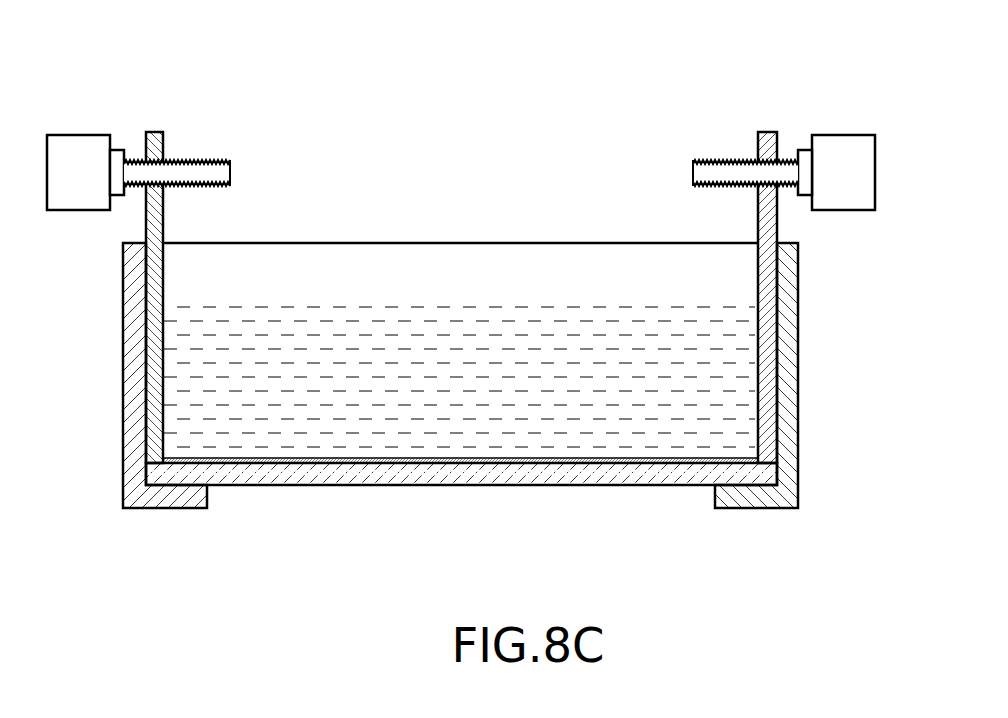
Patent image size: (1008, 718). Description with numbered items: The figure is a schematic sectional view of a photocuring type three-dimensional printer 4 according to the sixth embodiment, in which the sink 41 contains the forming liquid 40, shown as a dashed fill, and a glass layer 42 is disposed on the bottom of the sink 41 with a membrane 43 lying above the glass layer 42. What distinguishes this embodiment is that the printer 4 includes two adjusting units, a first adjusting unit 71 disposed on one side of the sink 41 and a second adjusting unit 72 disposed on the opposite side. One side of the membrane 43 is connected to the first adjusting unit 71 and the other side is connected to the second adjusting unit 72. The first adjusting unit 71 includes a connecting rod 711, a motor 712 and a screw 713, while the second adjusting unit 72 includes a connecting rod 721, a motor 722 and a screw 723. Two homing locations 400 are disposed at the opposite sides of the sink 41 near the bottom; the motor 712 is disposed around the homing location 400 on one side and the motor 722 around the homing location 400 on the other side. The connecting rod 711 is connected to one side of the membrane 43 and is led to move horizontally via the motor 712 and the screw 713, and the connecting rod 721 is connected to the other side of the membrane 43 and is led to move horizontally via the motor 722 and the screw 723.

The 3D printer 4 is at (428, 125).
The forming liquid 40 is at (578, 335).
The sink 41 is at (788, 445).
The glass layer 42 is at (407, 475).
The membrane 43 is at (590, 460).
The homing location 400 is at (161, 467).
The first adjusting unit 71 is at (73, 53).
The connecting rod 711 is at (155, 143).
The motor 712 is at (63, 152).
The screw 713 is at (197, 172).
The second adjusting unit 72 is at (692, 53).
The connecting rod 721 is at (768, 143).
The motor 722 is at (858, 152).
The screw 723 is at (727, 172).